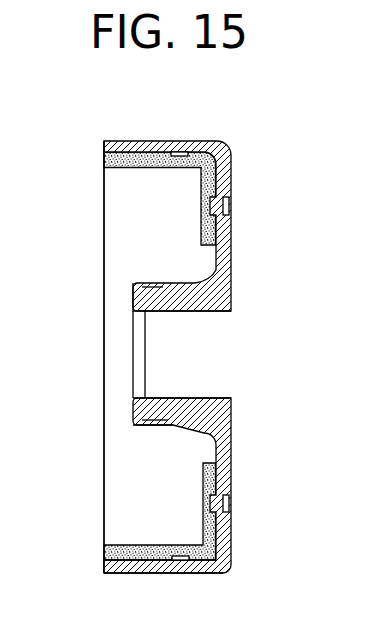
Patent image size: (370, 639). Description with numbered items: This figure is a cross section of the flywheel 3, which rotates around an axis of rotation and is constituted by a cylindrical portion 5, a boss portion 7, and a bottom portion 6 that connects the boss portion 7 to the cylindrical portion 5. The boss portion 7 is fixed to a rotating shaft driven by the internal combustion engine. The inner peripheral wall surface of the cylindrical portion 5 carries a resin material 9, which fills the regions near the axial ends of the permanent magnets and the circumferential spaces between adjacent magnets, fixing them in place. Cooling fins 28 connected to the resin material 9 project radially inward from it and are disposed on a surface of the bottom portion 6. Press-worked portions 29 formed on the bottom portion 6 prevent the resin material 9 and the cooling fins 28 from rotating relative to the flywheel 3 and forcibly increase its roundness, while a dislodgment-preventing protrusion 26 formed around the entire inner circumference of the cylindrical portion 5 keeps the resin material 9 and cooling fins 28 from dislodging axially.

The flywheel 3 is at (231, 272).
The cylindrical portion 5 is at (157, 575).
The bottom portion 6 is at (231, 428).
The boss portion 7 is at (200, 307).
The resin material 9 is at (105, 552).
The dislodgment-preventing protrusion 26 is at (181, 152).
The cooling fins 28 is at (224, 185).
The press-worked portions 29 is at (229, 205).